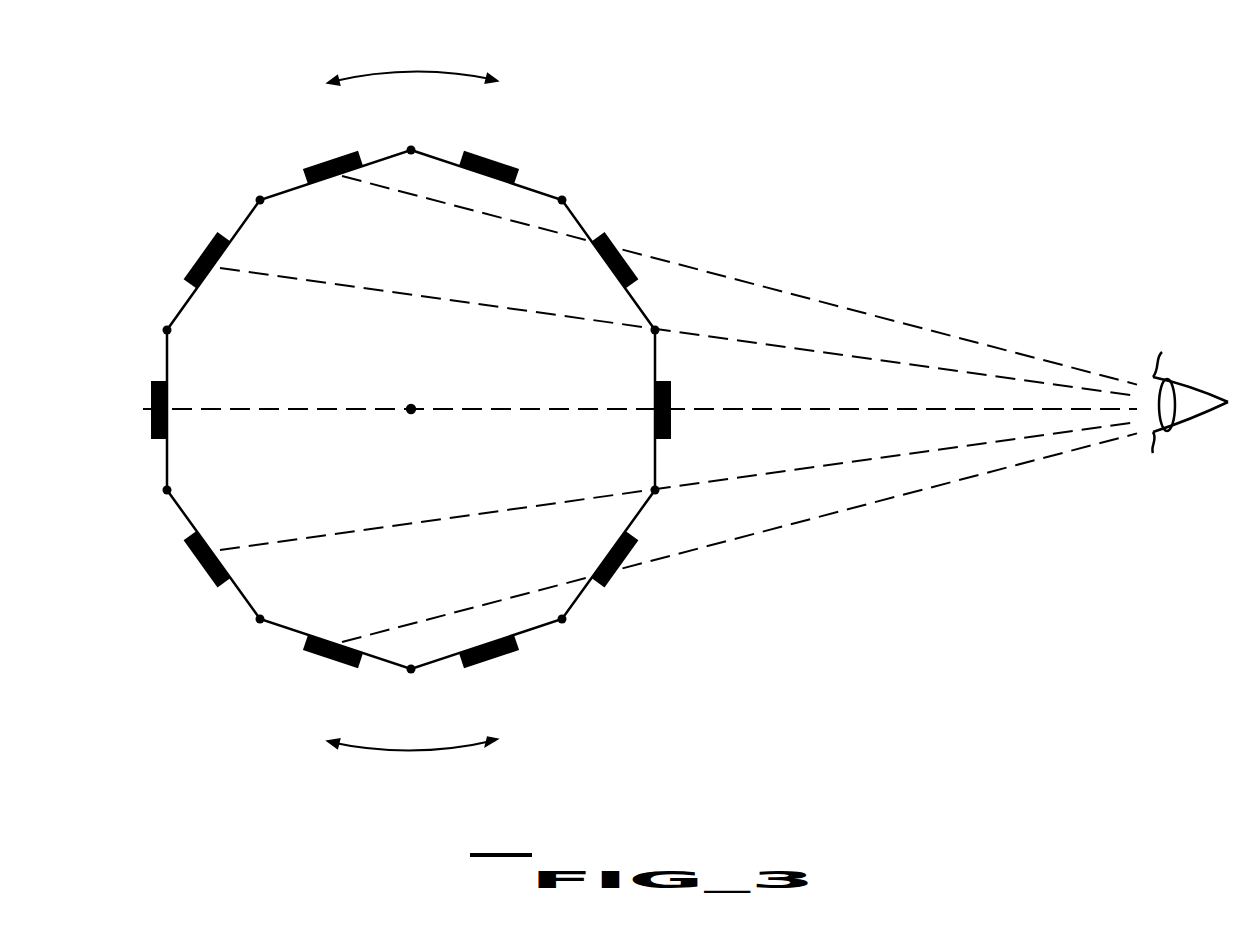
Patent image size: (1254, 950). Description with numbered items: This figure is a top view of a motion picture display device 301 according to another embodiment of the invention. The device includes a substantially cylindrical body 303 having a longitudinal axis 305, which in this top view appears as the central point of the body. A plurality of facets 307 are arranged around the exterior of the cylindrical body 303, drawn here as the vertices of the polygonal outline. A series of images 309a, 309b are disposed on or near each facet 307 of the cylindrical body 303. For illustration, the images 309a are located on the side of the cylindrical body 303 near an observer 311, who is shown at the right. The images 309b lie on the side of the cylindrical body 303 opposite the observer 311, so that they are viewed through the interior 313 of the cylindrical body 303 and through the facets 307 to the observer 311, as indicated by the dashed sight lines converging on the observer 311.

The motion picture display device 301 is at (963, 51).
The cylindrical body 303 is at (578, 197).
The longitudinal axis 305 is at (411, 406).
The facets 307 is at (283, 192).
The images 309a is at (500, 162).
The images 309b is at (333, 160).
The observer 311 is at (1190, 378).
The interior 313 is at (270, 238).